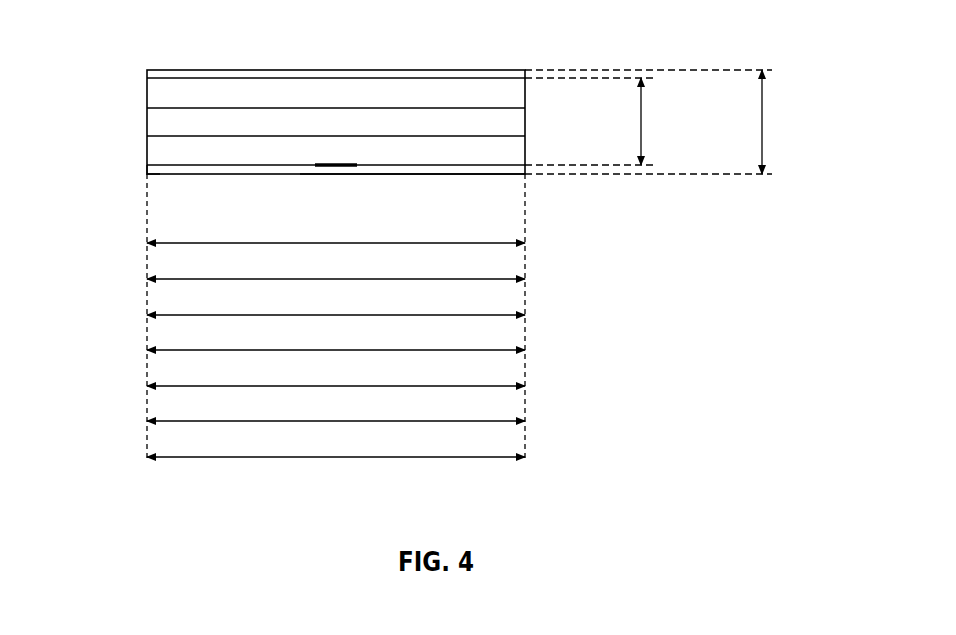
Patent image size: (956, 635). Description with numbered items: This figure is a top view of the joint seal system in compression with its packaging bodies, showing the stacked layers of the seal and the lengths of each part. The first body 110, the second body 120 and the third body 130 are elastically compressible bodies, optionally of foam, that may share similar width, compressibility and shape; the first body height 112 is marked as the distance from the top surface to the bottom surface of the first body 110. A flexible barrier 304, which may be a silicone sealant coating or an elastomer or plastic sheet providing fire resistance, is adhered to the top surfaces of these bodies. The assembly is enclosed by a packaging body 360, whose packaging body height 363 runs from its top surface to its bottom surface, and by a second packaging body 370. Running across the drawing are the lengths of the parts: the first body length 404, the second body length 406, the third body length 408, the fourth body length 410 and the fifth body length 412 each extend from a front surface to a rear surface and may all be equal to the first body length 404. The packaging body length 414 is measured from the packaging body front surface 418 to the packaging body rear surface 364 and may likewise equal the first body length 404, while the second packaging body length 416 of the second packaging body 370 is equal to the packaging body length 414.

The first body 110 is at (510, 146).
The second body 120 is at (510, 118).
The third body 130 is at (488, 96).
The first body height 112 is at (642, 97).
The flexible barrier 304 is at (336, 152).
The packaging body 360 is at (336, 177).
The packaging body height 363 is at (763, 97).
The packaging body rear surface 364 is at (147, 173).
The second packaging body 370 is at (316, 76).
The first body length 404 is at (338, 247).
The second body length 406 is at (338, 283).
The third body length 408 is at (338, 319).
The fourth body length 410 is at (338, 354).
The fifth body length 412 is at (338, 390).
The packaging body length 414 is at (338, 425).
The second packaging body length 416 is at (338, 461).
The packaging body front surface 418 is at (452, 177).